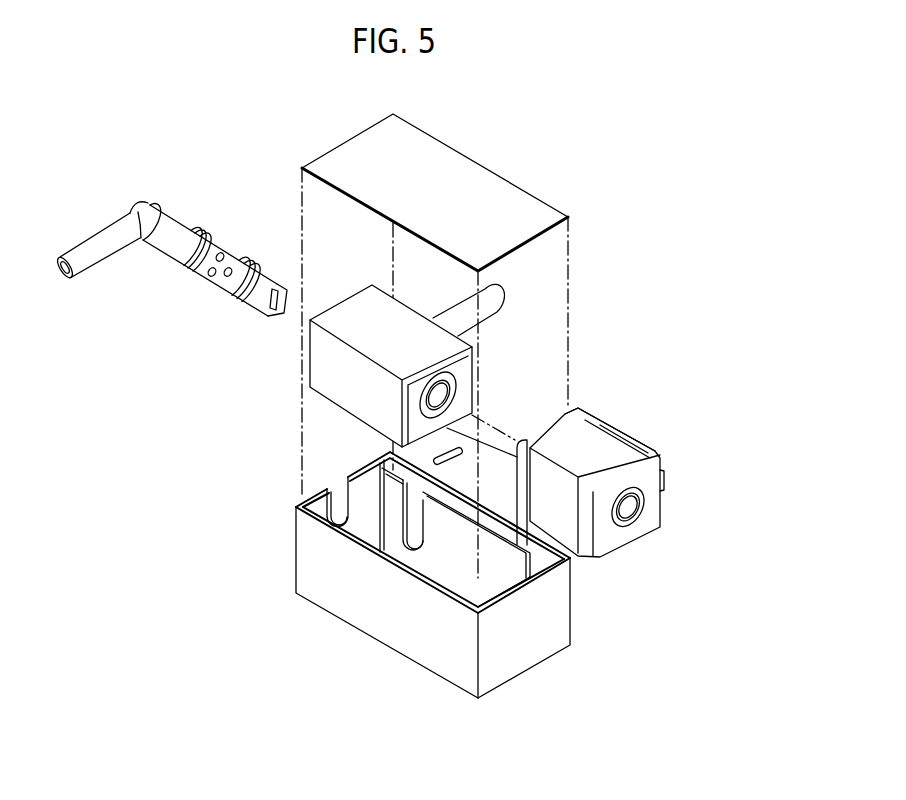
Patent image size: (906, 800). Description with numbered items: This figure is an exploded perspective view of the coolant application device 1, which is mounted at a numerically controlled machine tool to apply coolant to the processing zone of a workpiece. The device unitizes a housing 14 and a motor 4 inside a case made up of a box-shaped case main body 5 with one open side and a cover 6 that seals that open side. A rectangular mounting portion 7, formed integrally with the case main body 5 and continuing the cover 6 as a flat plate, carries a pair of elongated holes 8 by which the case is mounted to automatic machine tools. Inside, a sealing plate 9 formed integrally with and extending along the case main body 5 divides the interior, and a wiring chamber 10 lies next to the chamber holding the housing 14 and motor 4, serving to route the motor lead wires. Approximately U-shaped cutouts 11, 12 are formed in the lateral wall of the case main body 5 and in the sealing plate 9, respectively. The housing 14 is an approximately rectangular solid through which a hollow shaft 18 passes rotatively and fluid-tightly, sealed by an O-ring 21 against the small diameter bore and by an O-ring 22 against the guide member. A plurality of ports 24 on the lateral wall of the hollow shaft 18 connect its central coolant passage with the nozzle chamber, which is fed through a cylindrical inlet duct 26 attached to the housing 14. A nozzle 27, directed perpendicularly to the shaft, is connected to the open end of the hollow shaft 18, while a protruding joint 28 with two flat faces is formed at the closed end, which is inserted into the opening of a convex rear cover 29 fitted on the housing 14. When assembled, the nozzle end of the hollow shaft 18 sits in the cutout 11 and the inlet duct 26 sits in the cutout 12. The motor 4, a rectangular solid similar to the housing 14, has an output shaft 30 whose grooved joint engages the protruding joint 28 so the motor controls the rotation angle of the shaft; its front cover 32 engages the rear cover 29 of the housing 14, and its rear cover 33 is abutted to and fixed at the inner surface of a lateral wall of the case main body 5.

The coolant application device 1 is at (667, 210).
The motor 4 is at (632, 425).
The case main body 5 is at (398, 630).
The cover 6 is at (481, 181).
The mounting portion 7 is at (499, 467).
The elongated holes 8 is at (460, 452).
The sealing plate 9 is at (503, 577).
The wiring chamber 10 is at (523, 543).
The cutout 11 is at (347, 497).
The cutout 12 is at (400, 520).
The housing 14 is at (343, 372).
The hollow shaft 18 is at (188, 233).
The O-ring 21 is at (190, 265).
The O-ring 22 is at (240, 290).
The ports 24 is at (232, 266).
The inlet duct 26 is at (493, 292).
The nozzle 27 is at (107, 232).
The protruding joint 28 is at (273, 305).
The rear cover 29 is at (430, 362).
The output shaft 30 is at (629, 505).
The front cover 32 is at (589, 399).
The rear cover 33 is at (637, 455).